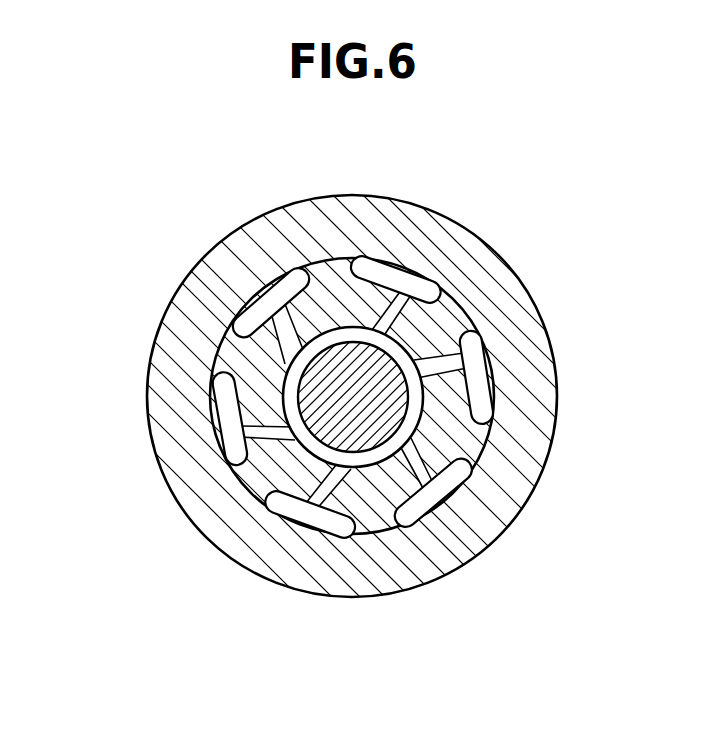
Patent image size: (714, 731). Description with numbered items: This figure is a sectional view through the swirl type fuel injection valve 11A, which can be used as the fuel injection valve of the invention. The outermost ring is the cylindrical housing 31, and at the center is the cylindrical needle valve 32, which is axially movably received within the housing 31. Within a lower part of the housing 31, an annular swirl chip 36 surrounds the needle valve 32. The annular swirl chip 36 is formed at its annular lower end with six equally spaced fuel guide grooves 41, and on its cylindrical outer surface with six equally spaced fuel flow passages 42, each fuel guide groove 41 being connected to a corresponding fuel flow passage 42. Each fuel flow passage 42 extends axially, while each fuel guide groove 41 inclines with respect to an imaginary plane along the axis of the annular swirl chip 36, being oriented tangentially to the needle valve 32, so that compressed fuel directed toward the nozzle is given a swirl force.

The swirl type fuel injection valve 11A is at (609, 183).
The cylindrical housing 31 is at (512, 326).
The needle valve 32 is at (317, 393).
The annular swirl chip 36 is at (373, 503).
The fuel guide groove 41 is at (367, 307).
The fuel flow passage 42 is at (397, 275).